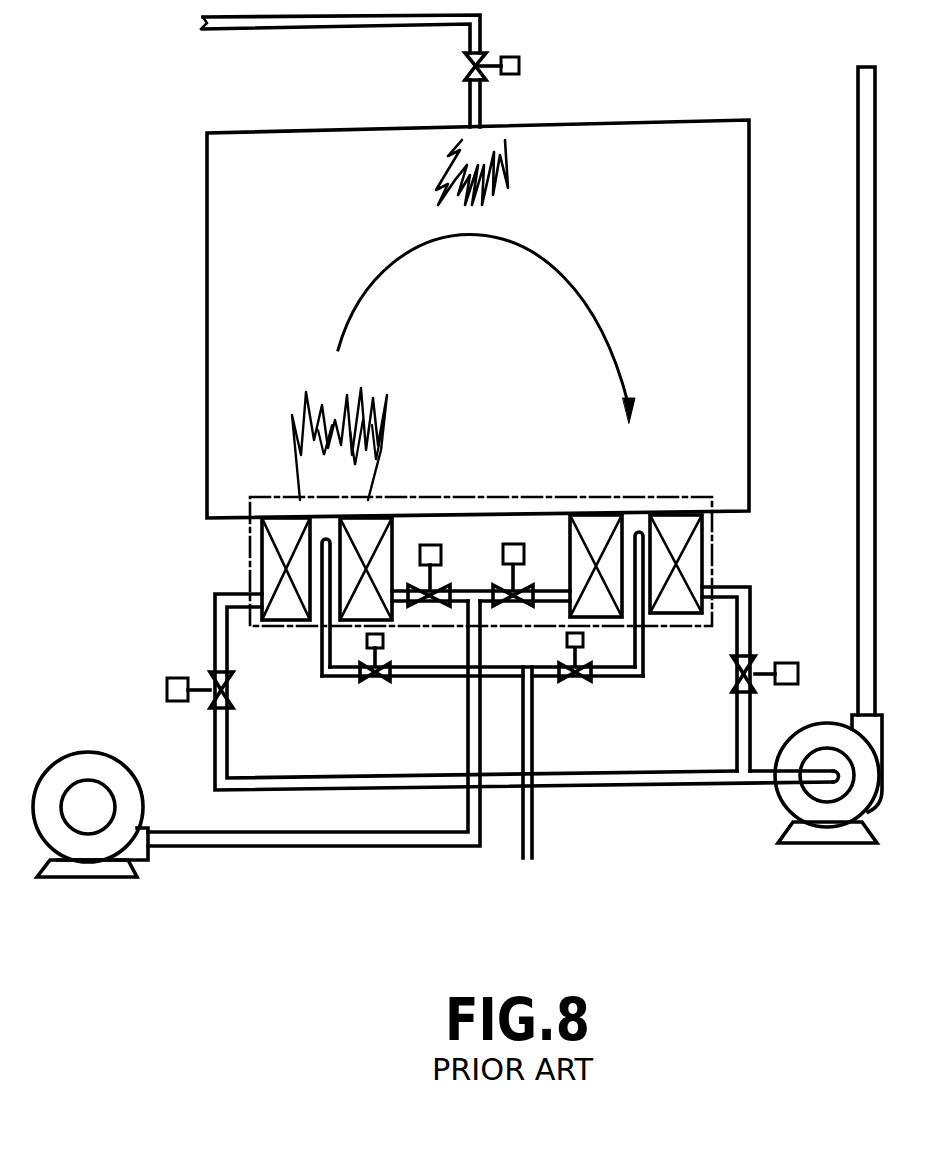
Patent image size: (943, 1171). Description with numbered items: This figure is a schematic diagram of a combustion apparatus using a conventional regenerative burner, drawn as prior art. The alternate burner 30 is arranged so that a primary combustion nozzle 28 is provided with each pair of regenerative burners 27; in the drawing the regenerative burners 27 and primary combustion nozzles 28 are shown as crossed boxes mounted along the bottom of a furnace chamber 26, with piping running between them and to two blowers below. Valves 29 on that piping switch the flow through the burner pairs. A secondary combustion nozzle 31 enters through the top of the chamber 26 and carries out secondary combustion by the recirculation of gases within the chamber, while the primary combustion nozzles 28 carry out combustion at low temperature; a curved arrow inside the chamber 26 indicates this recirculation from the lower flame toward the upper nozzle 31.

The furnace / combustion chamber 26 is at (208, 322).
The regenerative burners 27 is at (325, 528).
The primary combustion nozzle 28 is at (320, 612).
The switching valve 29 is at (165, 690).
The alternate burner 30 is at (645, 492).
The secondary combustion nozzle 31 is at (484, 110).